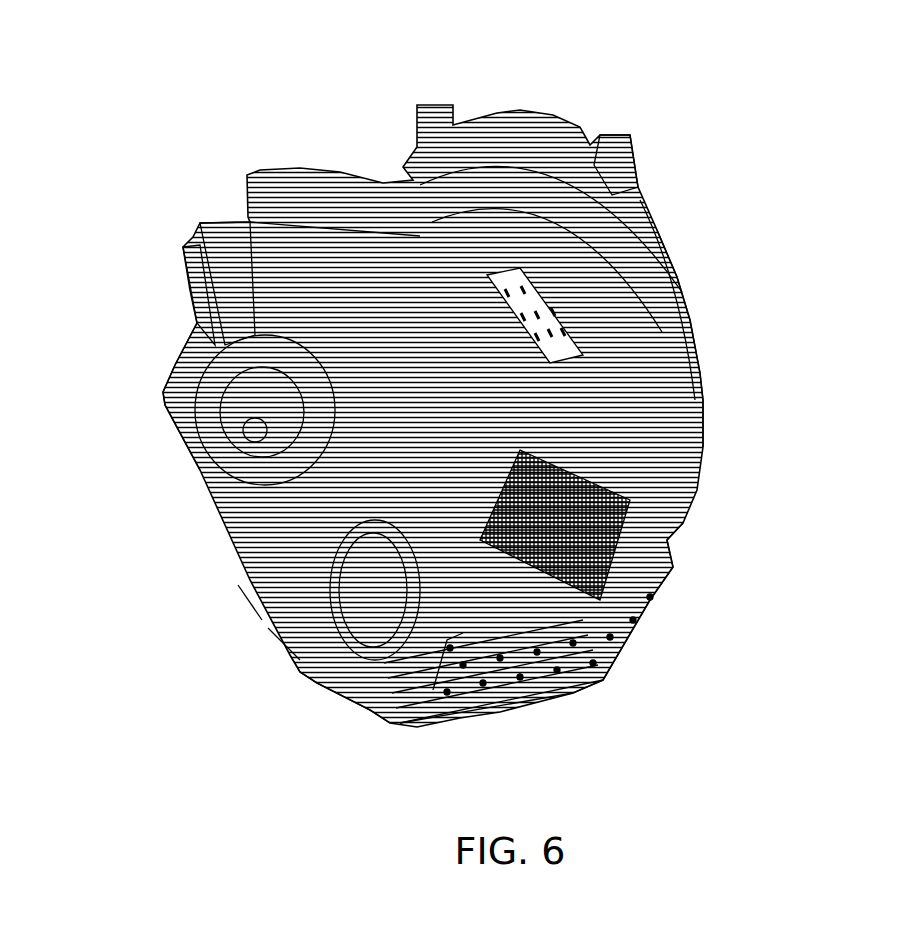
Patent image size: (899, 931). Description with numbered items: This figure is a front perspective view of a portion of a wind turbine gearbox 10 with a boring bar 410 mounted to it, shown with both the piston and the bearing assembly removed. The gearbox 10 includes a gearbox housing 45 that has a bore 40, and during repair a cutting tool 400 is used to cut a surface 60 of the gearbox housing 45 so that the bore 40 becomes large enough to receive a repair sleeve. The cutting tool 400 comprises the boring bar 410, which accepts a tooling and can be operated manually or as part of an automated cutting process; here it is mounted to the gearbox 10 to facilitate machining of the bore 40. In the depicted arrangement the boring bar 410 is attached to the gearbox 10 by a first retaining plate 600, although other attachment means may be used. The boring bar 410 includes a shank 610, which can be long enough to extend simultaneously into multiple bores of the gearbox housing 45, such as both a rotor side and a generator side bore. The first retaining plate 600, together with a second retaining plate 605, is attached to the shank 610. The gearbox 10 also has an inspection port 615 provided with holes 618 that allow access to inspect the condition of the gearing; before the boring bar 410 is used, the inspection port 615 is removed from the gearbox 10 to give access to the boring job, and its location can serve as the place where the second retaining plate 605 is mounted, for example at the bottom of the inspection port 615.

The gearbox 10 is at (800, 104).
The bore 40 is at (680, 287).
The gearbox housing 45 is at (177, 427).
The surface 60 is at (680, 533).
The cutting tool 400 is at (660, 237).
The boring bar 410 is at (273, 637).
The first retaining plate 600 is at (323, 687).
The second retaining plate 605 is at (592, 680).
The shank 610 is at (472, 687).
The inspection port 615 is at (577, 160).
The holes 618 is at (627, 180).